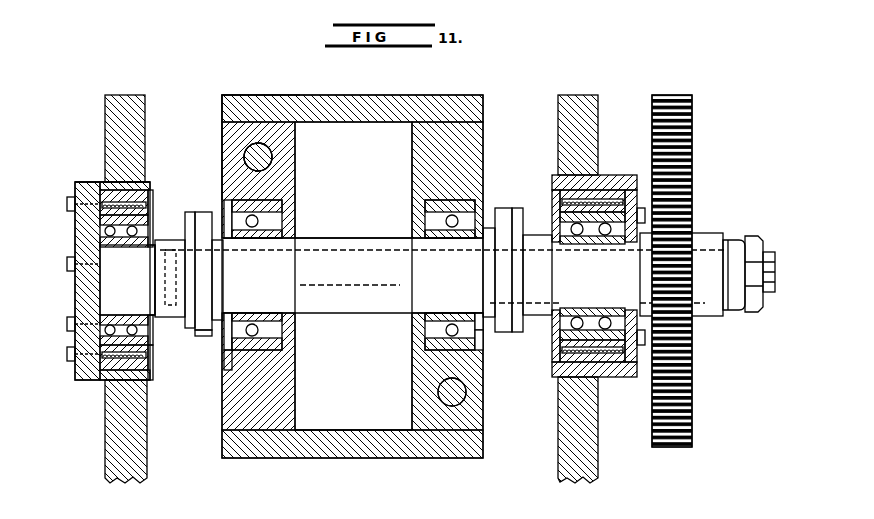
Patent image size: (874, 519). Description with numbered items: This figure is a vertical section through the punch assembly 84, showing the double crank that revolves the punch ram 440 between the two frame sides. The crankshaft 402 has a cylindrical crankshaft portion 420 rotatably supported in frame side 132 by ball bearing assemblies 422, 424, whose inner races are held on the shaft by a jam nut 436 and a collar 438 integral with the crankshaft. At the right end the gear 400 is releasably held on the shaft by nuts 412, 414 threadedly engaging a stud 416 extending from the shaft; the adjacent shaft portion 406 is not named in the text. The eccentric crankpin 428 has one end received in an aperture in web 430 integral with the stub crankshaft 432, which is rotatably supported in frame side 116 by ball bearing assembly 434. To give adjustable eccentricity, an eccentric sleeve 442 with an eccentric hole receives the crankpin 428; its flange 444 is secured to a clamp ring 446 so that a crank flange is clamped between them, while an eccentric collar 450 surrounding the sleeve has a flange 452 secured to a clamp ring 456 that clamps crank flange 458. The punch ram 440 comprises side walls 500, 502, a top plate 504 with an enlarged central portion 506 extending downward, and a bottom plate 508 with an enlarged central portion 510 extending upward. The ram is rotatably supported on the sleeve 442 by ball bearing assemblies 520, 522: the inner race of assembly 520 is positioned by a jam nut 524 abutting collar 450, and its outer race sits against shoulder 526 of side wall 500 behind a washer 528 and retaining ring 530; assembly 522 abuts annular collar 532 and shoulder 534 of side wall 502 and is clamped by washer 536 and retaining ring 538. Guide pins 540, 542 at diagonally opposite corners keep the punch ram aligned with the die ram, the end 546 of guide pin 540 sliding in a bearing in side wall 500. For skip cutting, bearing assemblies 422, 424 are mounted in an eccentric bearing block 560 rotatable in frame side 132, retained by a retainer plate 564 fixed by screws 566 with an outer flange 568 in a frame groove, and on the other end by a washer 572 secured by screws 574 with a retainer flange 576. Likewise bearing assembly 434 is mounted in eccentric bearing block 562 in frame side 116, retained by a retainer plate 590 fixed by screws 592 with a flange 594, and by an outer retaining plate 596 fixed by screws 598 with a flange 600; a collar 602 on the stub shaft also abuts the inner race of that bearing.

The punch assembly 84 is at (476, 92).
The frame side 116 is at (147, 458).
The frame side 132 is at (598, 452).
The gear 400 is at (690, 142).
The crankshaft 402 is at (358, 236).
The shaft end portion 406 is at (707, 240).
The nut 412 is at (750, 238).
The nut 414 is at (736, 314).
The stud 416 is at (773, 268).
The cylindrical crankshaft portion 420 is at (636, 285).
The ball bearing assembly 422 is at (546, 236).
The ball bearing assembly 424 is at (605, 248).
The eccentric crankpin 428 is at (345, 285).
The web 430 is at (172, 250).
The stub crankshaft 432 is at (100, 285).
The ball bearing assembly 434 is at (156, 240).
The jam nut 436 is at (640, 216).
The collar 438 is at (592, 299).
The punch ram 440 is at (270, 93).
The eccentric sleeve 442 is at (320, 245).
The flange 444 is at (516, 208).
The clamp ring 446 is at (526, 278).
The eccentric collar 450 is at (214, 240).
The flange 452 is at (205, 338).
The clamp ring 456 is at (205, 212).
The crank flange 458 is at (150, 322).
The side wall 500 is at (224, 144).
The side wall 502 is at (483, 130).
The top plate 504 is at (352, 100).
The enlarged central portion 506 is at (347, 123).
The bottom plate 508 is at (370, 442).
The enlarged central portion 510 is at (338, 430).
The ball bearing assembly 520 is at (270, 247).
The ball bearing assembly 522 is at (452, 243).
The jam nut 524 is at (229, 243).
The shoulder 526 is at (272, 343).
The washer 528 is at (255, 362).
The retaining ring 530 is at (232, 372).
The annular collar 532 is at (503, 212).
The shoulder 534 is at (420, 345).
The washer 536 is at (483, 388).
The retaining ring 538 is at (483, 357).
The guide pin 540 is at (270, 162).
The guide pin 542 is at (440, 395).
The end of guide pin 546 is at (270, 155).
The eccentric bearing block 560 is at (590, 190).
The eccentric bearing block 562 is at (120, 182).
The retainer plate 564 is at (556, 195).
The screws 566 is at (560, 358).
The outer flange 568 is at (558, 377).
The washer 572 is at (615, 372).
The screws 574 is at (641, 348).
The flange 576 is at (600, 380).
The retainer plate 590 is at (152, 352).
The screws 592 is at (150, 190).
The flange 594 is at (149, 380).
The outer retaining plate 596 is at (67, 264).
The screws 598 is at (67, 208).
The flange 600 is at (80, 183).
The collar 602 is at (152, 267).